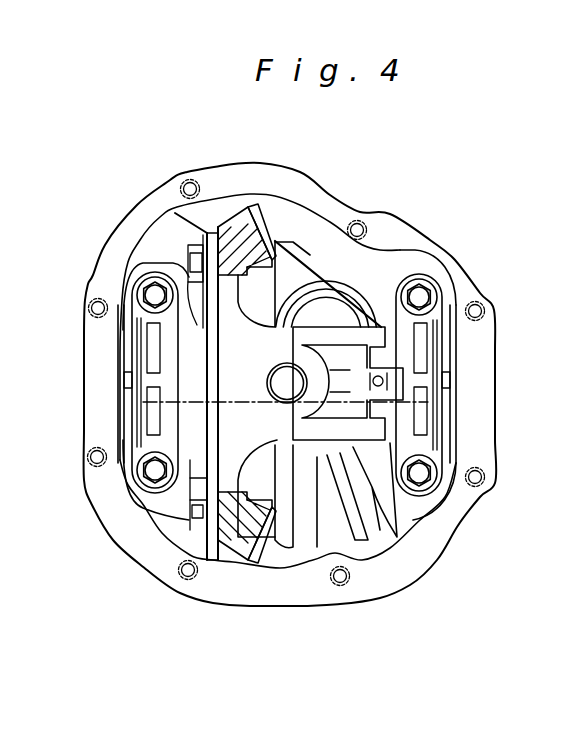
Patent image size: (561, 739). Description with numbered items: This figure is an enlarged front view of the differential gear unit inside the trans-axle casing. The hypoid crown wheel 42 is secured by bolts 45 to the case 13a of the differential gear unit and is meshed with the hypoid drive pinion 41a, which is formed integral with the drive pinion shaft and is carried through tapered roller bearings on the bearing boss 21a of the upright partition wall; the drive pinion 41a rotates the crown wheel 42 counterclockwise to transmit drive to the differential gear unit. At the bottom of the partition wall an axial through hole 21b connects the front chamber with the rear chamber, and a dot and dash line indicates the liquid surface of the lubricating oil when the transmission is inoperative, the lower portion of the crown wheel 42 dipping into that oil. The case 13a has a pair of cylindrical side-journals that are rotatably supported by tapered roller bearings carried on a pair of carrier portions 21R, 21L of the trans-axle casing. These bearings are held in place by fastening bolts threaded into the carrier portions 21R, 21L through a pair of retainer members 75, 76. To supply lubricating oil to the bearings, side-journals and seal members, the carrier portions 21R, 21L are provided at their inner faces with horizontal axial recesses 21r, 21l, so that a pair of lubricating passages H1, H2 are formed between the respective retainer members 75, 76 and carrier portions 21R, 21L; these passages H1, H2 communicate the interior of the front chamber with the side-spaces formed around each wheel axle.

The hypoid crown wheel 42 is at (258, 207).
The hypoid drive pinion 41a is at (308, 287).
The case of differential gear unit 13a is at (374, 335).
The bolts 45 is at (190, 250).
The retainer member 75 is at (147, 334).
The retainer member 76 is at (432, 342).
The lubricating passage H1 is at (124, 378).
The lubricating passage H2 is at (450, 377).
The axial recess 21r is at (124, 387).
The axial recess 21l is at (450, 387).
The carrier portion 21L is at (482, 435).
The carrier portion 21R is at (103, 493).
The bearing boss 21a is at (357, 547).
The axial through hole 21b is at (383, 530).